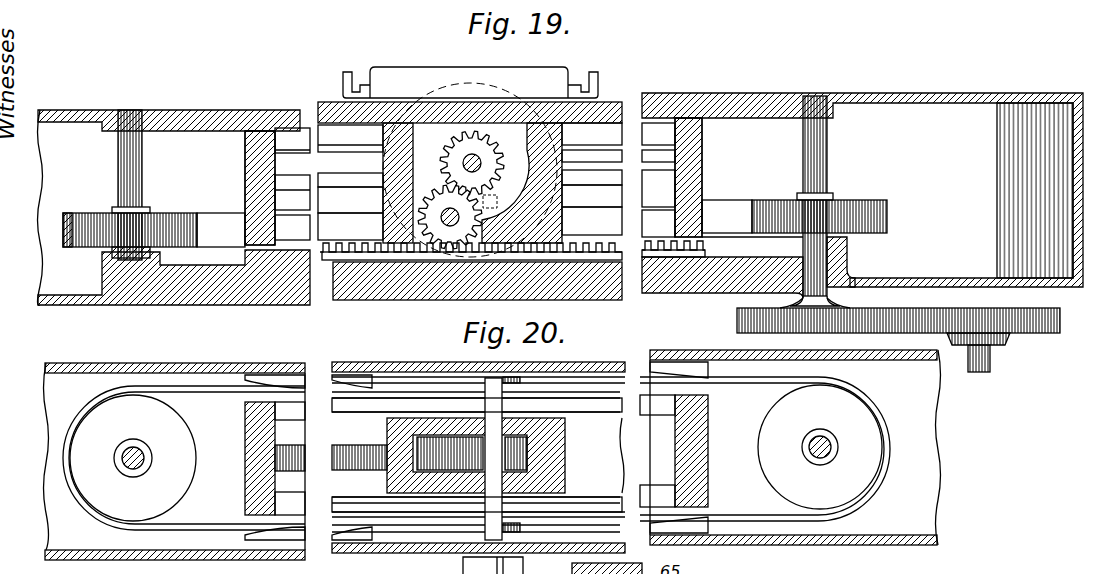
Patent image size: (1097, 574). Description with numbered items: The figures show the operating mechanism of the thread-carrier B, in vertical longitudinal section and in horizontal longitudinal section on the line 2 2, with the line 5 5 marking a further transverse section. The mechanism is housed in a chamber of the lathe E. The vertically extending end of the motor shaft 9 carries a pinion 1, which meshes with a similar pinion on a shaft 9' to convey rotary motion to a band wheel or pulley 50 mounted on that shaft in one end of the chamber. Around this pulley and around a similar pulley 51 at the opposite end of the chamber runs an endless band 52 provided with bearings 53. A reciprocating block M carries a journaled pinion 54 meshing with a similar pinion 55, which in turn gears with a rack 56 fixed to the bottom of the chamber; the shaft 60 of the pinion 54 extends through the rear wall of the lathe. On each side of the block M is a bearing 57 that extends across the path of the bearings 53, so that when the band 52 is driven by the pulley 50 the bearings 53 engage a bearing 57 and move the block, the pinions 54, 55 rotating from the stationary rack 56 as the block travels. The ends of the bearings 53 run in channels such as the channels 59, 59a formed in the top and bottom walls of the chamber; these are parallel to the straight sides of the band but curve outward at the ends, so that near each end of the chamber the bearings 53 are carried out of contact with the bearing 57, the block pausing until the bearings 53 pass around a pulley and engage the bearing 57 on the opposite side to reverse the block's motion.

In FIG. 19, the section line 2 is at (22, 189).
In FIG. 19, the pulley 51 is at (165, 213).
In FIG. 20, the pulley 51 is at (133, 458).
In FIG. 19, the thread-carrier B is at (470, 82).
In FIG. 20, the thread-carrier B is at (481, 565).
In FIG. 19, the pinion 54 is at (492, 160).
In FIG. 19, the shaft 60 is at (472, 163).
In FIG. 19, the pinion 55 is at (440, 195).
In FIG. 20, the pinion 55 is at (415, 447).
In FIG. 19, the rack 56 is at (388, 258).
In FIG. 20, the rack 56 is at (372, 462).
In FIG. 19, the reciprocating block M is at (562, 166).
In FIG. 20, the reciprocating block M is at (562, 452).
In FIG. 19, the bearings 53 is at (563, 198).
In FIG. 20, the bearings 53 is at (512, 528).
In FIG. 19, the shaft 9' is at (858, 262).
In FIG. 20, the shaft 9' is at (799, 450).
In FIG. 19, the band wheel or pulley 50 is at (887, 213).
In FIG. 20, the band wheel or pulley 50 is at (835, 447).
In FIG. 19, the endless band 52 is at (890, 232).
In FIG. 20, the endless band 52 is at (872, 401).
In FIG. 19, the lathe E is at (940, 215).
In FIG. 19, the pinion 1 is at (1060, 320).
In FIG. 19, the shaft 9 is at (981, 354).
In FIG. 20, the bearing 57 is at (485, 503).
In FIG. 20, the section line 5 is at (410, 565).
In FIG. 20, the channel 59a is at (705, 372).
In FIG. 20, the channel 59 is at (702, 516).